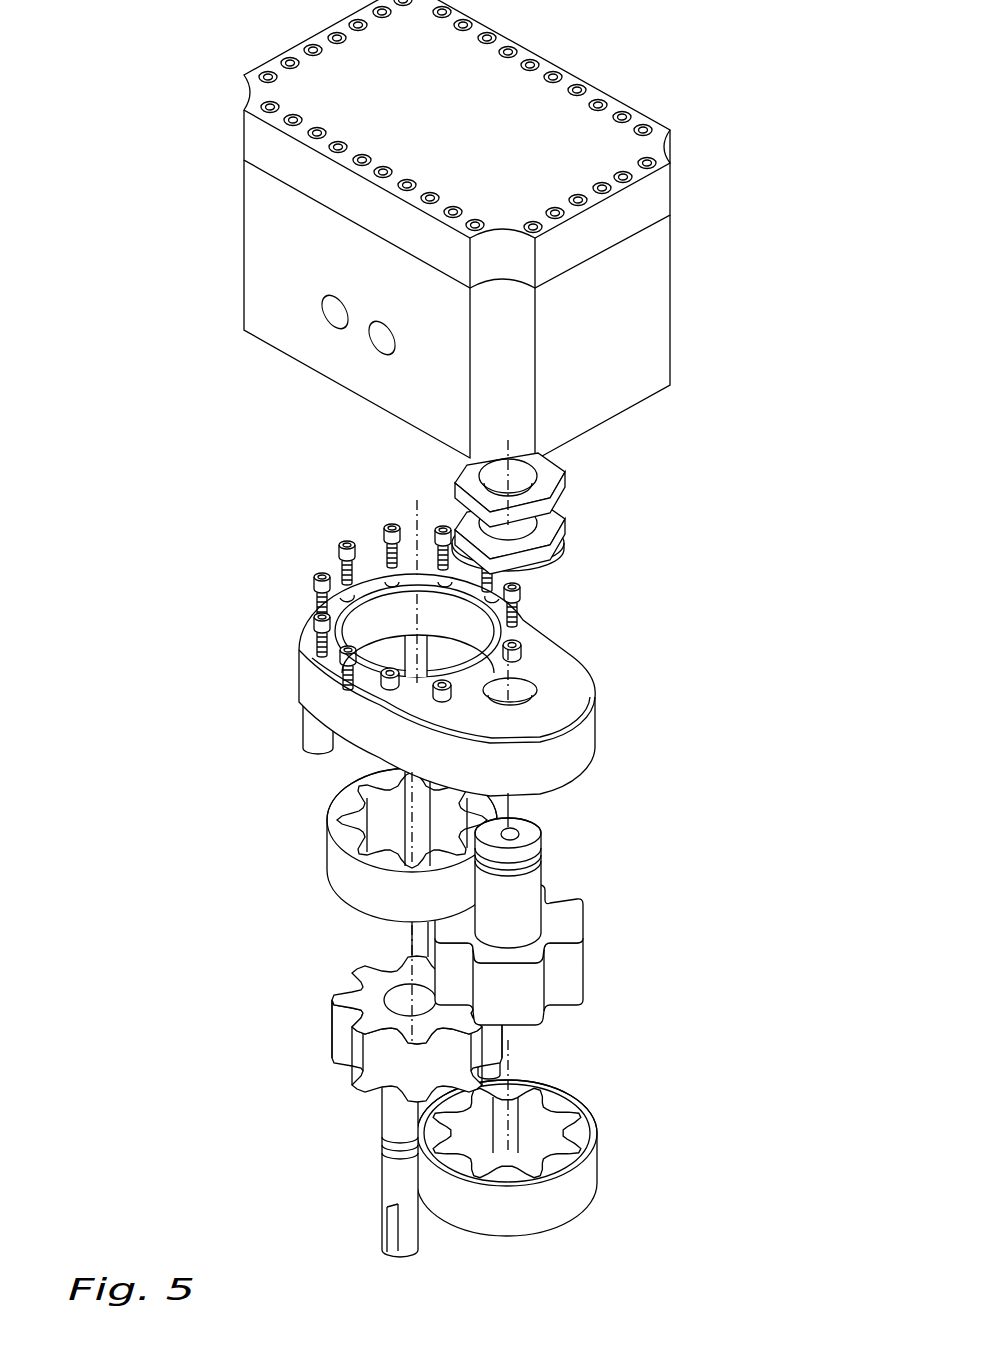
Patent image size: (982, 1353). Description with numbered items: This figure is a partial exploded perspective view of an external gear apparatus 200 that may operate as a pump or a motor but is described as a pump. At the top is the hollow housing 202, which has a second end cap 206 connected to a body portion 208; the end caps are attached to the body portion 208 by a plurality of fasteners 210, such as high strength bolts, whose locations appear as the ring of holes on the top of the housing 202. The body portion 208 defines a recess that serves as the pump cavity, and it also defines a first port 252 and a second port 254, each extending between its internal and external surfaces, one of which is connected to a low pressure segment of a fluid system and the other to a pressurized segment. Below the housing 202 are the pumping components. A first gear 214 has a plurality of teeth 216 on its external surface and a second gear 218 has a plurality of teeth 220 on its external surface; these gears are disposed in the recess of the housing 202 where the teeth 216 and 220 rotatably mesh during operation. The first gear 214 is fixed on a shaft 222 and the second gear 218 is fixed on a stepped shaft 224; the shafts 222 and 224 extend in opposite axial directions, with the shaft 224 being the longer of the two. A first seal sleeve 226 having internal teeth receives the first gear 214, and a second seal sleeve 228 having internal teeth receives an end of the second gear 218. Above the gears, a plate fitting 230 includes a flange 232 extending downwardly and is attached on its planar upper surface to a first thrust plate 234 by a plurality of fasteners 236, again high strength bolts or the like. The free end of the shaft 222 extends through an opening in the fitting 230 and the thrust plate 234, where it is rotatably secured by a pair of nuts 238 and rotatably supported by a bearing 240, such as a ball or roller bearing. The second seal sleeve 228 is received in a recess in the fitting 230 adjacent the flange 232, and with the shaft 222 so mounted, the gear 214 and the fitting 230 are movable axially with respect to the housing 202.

The external gear apparatus 200 is at (115, 730).
The housing 202 is at (662, 108).
The second end cap 206 is at (660, 197).
The body portion 208 is at (650, 353).
The fasteners 210 is at (553, 73).
The first gear 214 is at (588, 1003).
The teeth 216 is at (572, 932).
The second gear 218 is at (348, 1090).
The teeth 220 is at (345, 997).
The shaft 222 is at (534, 875).
The stepped shaft 224 is at (415, 1238).
The first seal sleeve 226 is at (567, 1197).
The second seal sleeve 228 is at (333, 857).
The plate fitting 230 is at (599, 732).
The flange 232 is at (308, 733).
The first thrust plate 234 is at (573, 675).
The fasteners 236 is at (392, 525).
The nuts 238 is at (553, 503).
The bearing 240 is at (553, 537).
The first port 252 is at (325, 322).
The second port 254 is at (372, 348).